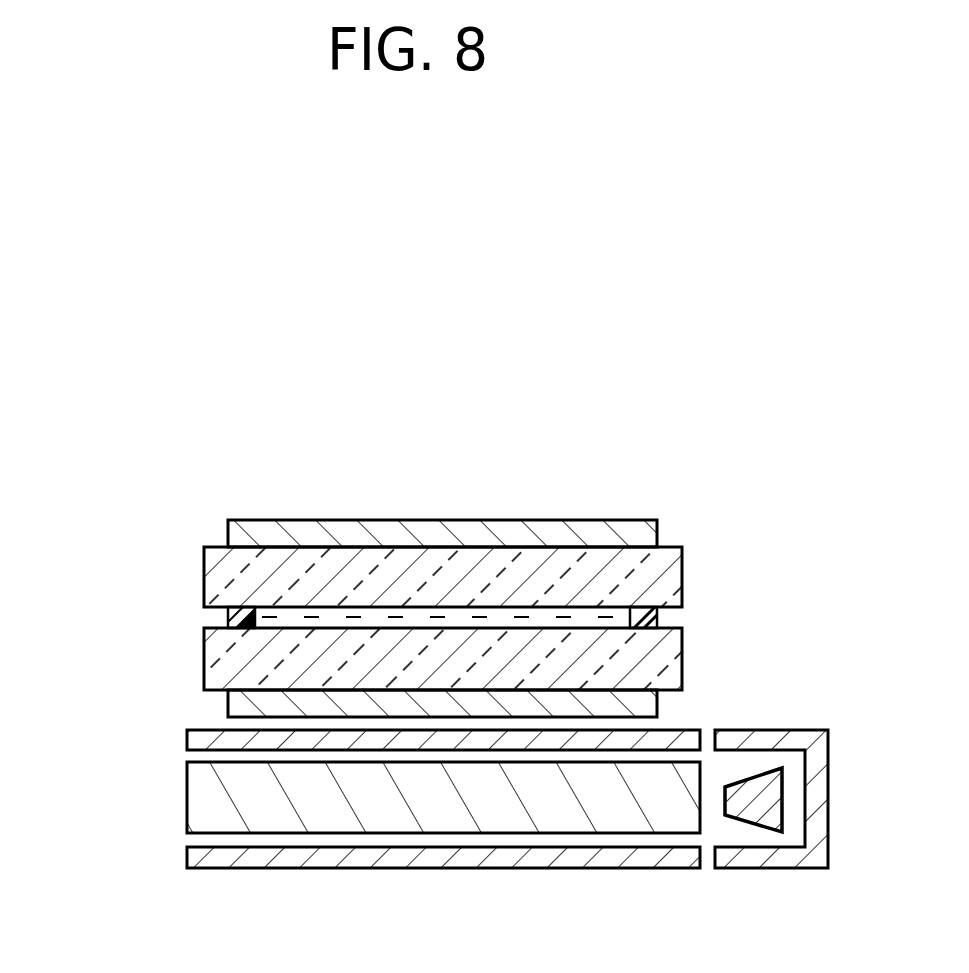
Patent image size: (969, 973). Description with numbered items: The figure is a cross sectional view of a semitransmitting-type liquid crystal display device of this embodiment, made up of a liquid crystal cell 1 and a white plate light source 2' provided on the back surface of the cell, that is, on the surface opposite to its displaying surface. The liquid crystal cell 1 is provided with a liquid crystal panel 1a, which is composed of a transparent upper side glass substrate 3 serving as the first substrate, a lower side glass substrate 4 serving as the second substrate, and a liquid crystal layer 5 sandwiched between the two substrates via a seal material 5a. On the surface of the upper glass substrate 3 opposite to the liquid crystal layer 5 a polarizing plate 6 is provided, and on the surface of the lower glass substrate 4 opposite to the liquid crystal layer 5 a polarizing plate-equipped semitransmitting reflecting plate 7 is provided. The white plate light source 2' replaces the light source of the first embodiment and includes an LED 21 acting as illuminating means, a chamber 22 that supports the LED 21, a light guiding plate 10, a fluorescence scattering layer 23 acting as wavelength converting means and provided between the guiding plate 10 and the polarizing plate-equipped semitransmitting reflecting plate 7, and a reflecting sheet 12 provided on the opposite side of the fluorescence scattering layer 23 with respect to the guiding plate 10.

The liquid crystal cell 1 is at (74, 521).
The liquid crystal panel 1a is at (161, 547).
The upper side glass substrate 3 is at (683, 563).
The lower side glass substrate 4 is at (683, 652).
The liquid crystal layer 5 is at (477, 618).
The seal material 5a is at (235, 612).
The polarizing plate 6 is at (597, 523).
The polarizing plate-equipped semitransmitting reflecting plate 7 is at (660, 700).
The white plate light source 2' is at (505, 822).
The light guiding plate 10 is at (612, 818).
The reflecting sheet 12 is at (678, 865).
The LED 21 is at (788, 805).
The chamber 22 is at (818, 838).
The fluorescence scattering layer 23 is at (683, 728).